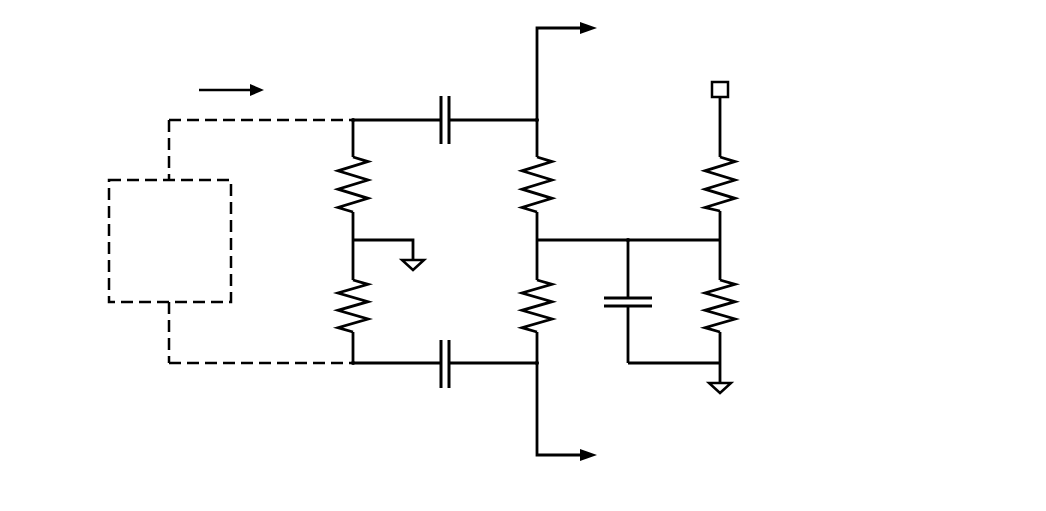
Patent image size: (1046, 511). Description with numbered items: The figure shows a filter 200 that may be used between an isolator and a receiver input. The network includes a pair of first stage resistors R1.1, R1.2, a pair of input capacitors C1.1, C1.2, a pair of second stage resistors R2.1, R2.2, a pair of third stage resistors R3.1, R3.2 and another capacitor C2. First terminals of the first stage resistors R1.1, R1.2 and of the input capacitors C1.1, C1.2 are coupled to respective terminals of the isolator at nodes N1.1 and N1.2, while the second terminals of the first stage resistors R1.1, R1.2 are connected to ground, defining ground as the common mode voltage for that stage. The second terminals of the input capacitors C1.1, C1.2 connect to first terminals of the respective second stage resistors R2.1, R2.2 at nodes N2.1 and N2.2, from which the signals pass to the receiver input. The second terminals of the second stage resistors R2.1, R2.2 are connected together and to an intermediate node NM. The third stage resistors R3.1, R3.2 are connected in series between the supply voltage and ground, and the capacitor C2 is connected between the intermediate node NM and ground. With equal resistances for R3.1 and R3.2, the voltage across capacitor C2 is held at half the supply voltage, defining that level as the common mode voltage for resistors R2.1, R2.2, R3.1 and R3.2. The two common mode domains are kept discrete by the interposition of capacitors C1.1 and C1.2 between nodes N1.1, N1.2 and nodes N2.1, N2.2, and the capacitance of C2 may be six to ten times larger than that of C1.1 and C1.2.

The filter 200 is at (440, 244).
The first stage resistor R1.1 is at (333, 184).
The first stage resistor R1.2 is at (333, 306).
The second stage resistor R2.1 is at (518, 184).
The second stage resistor R2.2 is at (518, 306).
The third stage resistor R3.1 is at (738, 184).
The third stage resistor R3.2 is at (738, 306).
The input capacitor C1.1 is at (445, 104).
The input capacitor C1.2 is at (445, 376).
The capacitor C2 is at (643, 298).
The node N1.1 is at (353, 118).
The node N1.2 is at (353, 366).
The node N2.1 is at (539, 118).
The node N2.2 is at (539, 361).
The intermediate node NM is at (628, 238).